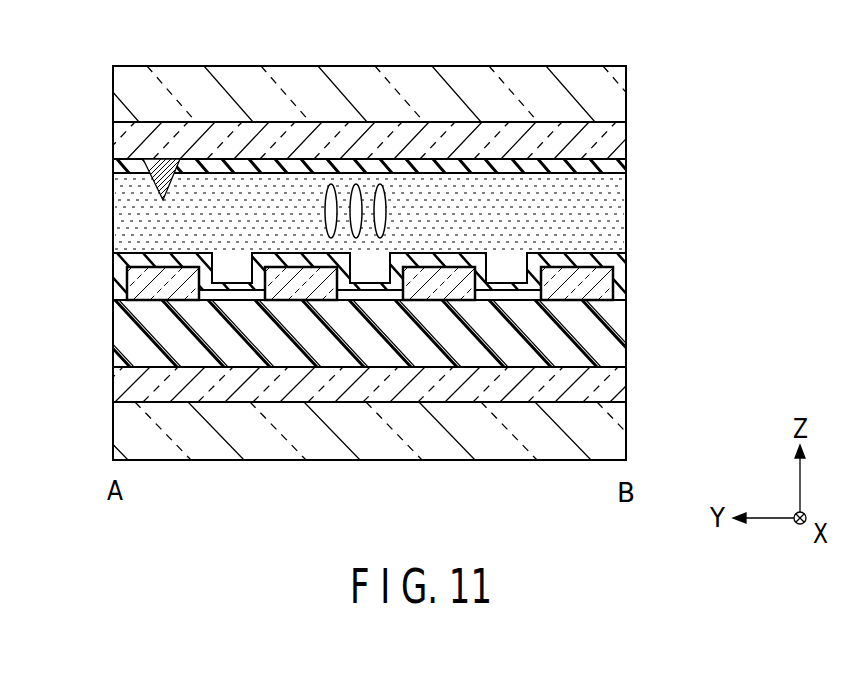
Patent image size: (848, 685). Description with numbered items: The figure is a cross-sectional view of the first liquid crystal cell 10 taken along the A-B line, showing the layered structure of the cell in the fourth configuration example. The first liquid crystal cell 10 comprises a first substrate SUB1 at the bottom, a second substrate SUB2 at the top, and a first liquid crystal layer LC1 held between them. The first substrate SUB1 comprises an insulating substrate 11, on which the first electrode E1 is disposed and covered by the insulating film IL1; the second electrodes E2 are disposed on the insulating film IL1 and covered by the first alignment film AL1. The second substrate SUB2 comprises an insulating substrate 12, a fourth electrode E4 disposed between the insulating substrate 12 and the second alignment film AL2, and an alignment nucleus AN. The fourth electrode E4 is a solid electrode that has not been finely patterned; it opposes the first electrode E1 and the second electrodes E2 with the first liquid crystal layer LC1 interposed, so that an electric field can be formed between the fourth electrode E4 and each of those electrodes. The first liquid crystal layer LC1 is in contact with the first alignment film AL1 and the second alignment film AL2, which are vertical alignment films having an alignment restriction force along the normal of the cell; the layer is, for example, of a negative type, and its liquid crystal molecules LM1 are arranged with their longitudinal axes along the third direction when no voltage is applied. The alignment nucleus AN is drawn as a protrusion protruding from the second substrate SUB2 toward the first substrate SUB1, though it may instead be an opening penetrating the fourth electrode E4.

The first liquid crystal cell 10 is at (395, 278).
The first substrate SUB1 is at (403, 361).
The second substrate SUB2 is at (400, 102).
The insulating substrate 11 is at (610, 427).
The insulating substrate 12 is at (626, 90).
The first electrode E1 is at (610, 388).
The second electrodes E2 is at (548, 285).
The fourth electrode E4 is at (626, 138).
The insulating film IL1 is at (610, 335).
The first alignment film AL1 is at (626, 259).
The second alignment film AL2 is at (626, 176).
The first liquid crystal layer LC1 is at (626, 215).
The liquid crystal molecules LM1 is at (395, 202).
The alignment nucleus AN is at (113, 182).